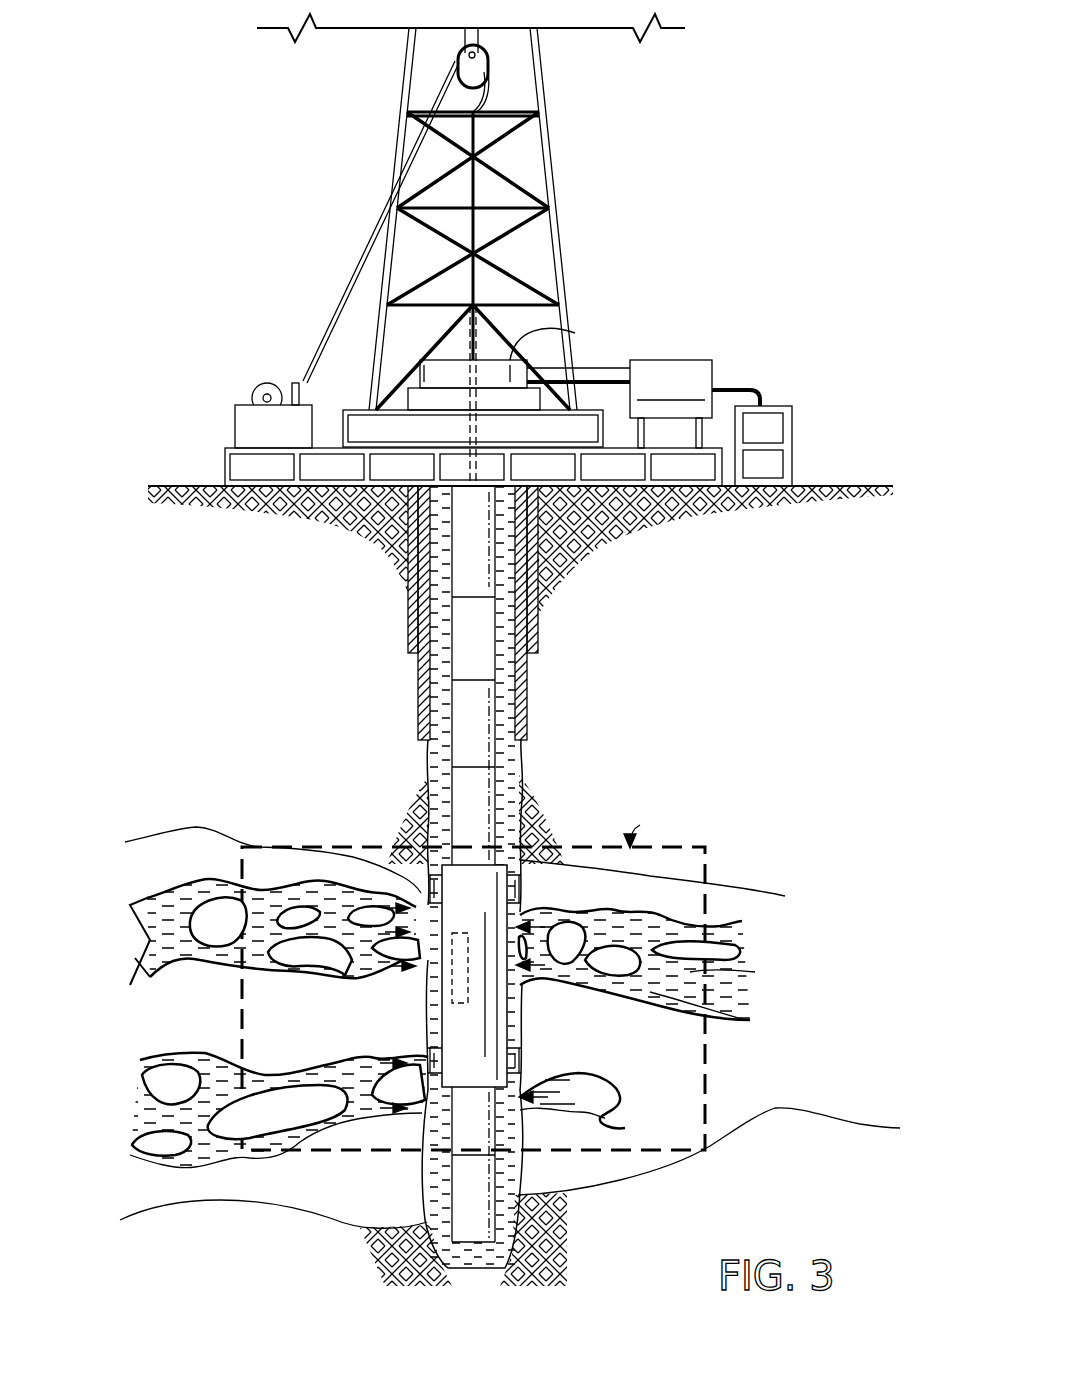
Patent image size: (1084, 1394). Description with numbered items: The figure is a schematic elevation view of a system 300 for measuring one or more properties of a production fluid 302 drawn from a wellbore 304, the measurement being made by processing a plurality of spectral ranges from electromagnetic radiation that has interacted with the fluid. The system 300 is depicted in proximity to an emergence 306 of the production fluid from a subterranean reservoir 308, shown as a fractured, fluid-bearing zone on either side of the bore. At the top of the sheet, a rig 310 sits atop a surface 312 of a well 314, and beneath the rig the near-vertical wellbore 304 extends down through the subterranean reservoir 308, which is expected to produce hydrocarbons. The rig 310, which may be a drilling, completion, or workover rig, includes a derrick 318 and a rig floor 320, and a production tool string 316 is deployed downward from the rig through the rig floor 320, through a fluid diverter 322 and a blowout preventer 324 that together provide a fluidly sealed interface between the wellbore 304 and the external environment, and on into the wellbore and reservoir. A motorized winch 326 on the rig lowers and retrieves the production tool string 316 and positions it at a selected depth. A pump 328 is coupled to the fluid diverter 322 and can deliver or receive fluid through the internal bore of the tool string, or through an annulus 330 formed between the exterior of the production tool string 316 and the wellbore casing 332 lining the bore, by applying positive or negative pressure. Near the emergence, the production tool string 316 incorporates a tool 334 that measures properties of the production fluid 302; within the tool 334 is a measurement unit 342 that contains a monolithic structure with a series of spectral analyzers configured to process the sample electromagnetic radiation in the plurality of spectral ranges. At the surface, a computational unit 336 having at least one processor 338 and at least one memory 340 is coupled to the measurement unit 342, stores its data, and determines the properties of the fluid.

The system 300 is at (190, 82).
The production fluid 302 is at (165, 910).
The wellbore 304 is at (519, 749).
The emergence 306 is at (378, 900).
The subterranean reservoir 308 is at (176, 1030).
The rig 310 is at (566, 218).
The surface 312 is at (892, 485).
The well 314 is at (690, 526).
The production tool string 316 is at (500, 672).
The derrick 318 is at (397, 156).
The rig floor 320 is at (225, 471).
The fluid diverter 322 is at (575, 335).
The blowout preventer 324 is at (405, 403).
The motorized winch 326 is at (262, 391).
The pump 328 is at (668, 360).
The annulus 330 is at (437, 763).
The wellbore casing 332 is at (418, 696).
The tool 334 is at (517, 1030).
The computational unit 336 is at (768, 406).
The processor 338 is at (793, 426).
The memory 340 is at (793, 461).
The measurement unit 342 is at (456, 933).